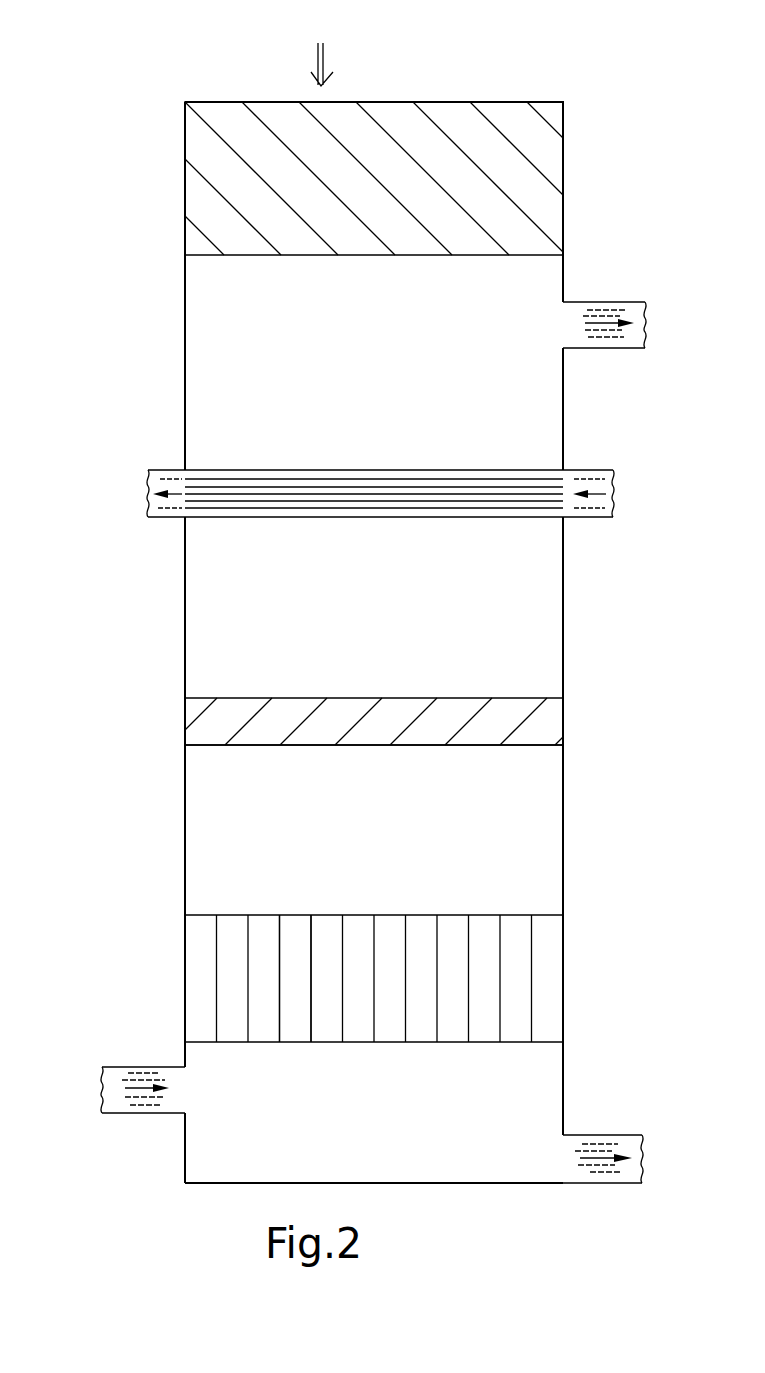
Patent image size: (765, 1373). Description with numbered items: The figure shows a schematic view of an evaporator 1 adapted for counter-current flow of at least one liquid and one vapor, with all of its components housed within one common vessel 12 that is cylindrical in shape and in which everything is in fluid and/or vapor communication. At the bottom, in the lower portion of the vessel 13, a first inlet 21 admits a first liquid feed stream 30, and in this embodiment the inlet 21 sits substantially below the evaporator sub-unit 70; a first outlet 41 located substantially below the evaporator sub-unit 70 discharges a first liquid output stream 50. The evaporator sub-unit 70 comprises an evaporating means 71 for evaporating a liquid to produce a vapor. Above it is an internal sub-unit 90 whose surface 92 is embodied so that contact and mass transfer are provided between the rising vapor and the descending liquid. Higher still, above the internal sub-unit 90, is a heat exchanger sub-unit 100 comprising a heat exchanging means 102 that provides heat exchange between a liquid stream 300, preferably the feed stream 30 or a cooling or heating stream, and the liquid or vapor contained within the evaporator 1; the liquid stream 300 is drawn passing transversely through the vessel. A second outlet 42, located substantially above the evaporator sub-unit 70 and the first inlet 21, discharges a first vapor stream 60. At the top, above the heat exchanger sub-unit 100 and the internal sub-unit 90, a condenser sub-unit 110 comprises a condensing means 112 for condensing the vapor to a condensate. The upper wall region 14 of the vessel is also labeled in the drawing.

The evaporator 1 is at (322, 44).
The common vessel 12 is at (565, 418).
The lower portion of the vessel 13 is at (183, 858).
The upper housing section 14 is at (183, 330).
The first inlet 21 is at (183, 1088).
The first liquid feed stream 30 is at (137, 1092).
The first outlet 41 is at (563, 1162).
The second outlet 42 is at (565, 325).
The first liquid output stream 50 is at (585, 1158).
The first vapor stream 60 is at (602, 323).
The evaporator sub-unit 70 is at (545, 968).
The evaporating means 71 is at (290, 987).
The internal sub-unit 90 is at (542, 725).
The surface 92 is at (500, 745).
The heat exchanger sub-unit 100 is at (273, 468).
The heat exchanging means 102 is at (413, 495).
The condenser sub-unit 110 is at (555, 175).
The condensing means 112 is at (308, 197).
The liquid stream 300 is at (173, 493).